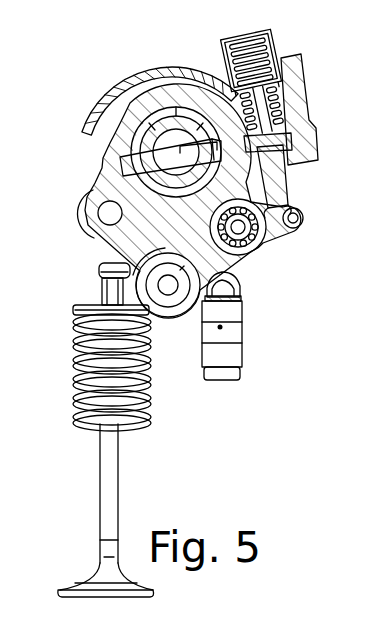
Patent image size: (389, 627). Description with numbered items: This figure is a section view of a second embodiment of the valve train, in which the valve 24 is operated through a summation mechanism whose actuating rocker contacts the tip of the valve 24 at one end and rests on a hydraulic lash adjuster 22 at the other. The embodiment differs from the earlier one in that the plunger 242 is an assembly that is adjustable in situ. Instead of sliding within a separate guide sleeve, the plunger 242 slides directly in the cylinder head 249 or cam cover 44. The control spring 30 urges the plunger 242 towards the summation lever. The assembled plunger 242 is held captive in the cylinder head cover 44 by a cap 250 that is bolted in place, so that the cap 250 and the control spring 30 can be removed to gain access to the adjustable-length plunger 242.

The cap 250 is at (227, 38).
The cam cover 44 is at (289, 80).
The control spring 30 is at (278, 106).
The cylinder head 249 is at (287, 130).
The plunger 242 is at (272, 177).
The hydraulic lash adjuster 22 is at (222, 327).
The valve 24 is at (99, 483).